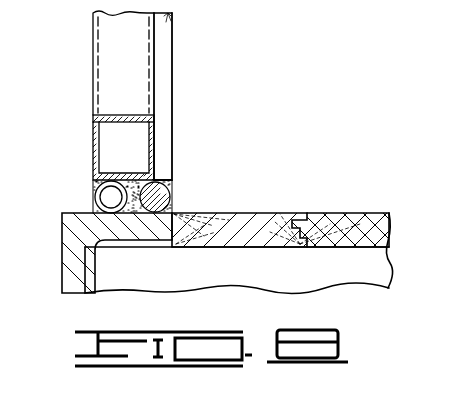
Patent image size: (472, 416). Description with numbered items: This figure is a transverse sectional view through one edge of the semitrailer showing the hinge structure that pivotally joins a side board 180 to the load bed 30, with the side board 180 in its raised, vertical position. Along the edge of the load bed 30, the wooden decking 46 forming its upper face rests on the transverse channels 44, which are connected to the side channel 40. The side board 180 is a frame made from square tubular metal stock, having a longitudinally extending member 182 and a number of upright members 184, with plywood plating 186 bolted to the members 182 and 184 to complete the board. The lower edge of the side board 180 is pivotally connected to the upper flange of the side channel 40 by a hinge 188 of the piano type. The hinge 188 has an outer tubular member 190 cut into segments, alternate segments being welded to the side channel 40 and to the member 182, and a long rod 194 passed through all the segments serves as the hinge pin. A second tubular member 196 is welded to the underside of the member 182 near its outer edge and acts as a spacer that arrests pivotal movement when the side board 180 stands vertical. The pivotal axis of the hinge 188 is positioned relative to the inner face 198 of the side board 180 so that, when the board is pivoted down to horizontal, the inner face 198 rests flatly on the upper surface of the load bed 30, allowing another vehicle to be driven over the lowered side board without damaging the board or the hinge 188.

The side board 180 is at (92, 33).
The upright members 184 is at (107, 45).
The plywood plating 186 is at (160, 82).
The inner face 198 is at (165, 44).
The longitudinally extending member 182 is at (92, 132).
The second tubular member 196 is at (98, 198).
The outer tubular member 190 is at (172, 200).
The long rod 194 is at (170, 190).
The hinge 188 is at (173, 193).
The side channel 40 is at (70, 248).
The wooden decking 46 is at (243, 222).
The load bed 30 is at (360, 213).
The transverse channels 44 is at (128, 273).